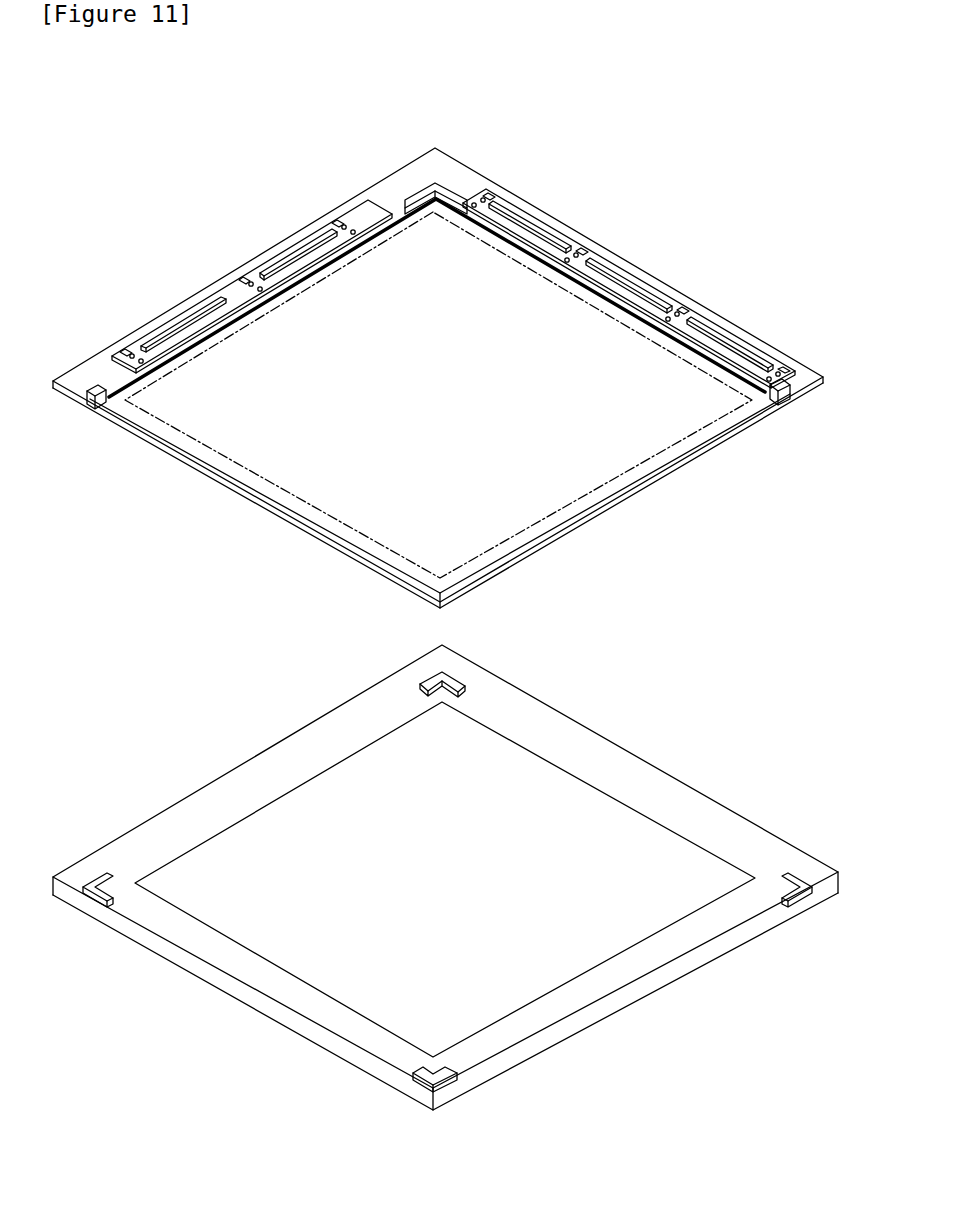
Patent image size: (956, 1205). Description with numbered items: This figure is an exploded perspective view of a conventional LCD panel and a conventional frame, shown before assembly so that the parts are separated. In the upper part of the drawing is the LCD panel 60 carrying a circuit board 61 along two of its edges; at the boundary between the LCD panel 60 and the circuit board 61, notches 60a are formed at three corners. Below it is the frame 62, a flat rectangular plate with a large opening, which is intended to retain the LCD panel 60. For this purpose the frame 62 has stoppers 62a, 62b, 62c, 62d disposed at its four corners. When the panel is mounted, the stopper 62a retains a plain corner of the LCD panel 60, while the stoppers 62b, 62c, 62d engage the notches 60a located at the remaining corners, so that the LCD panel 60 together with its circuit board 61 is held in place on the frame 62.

The LCD panel 60 is at (635, 497).
The notches 60a is at (440, 187).
The circuit board 61 is at (227, 272).
The frame 62 is at (617, 743).
The stopper 62a is at (445, 1080).
The stopper 62b is at (790, 873).
The stopper 62c is at (457, 685).
The stopper 62d is at (102, 877).